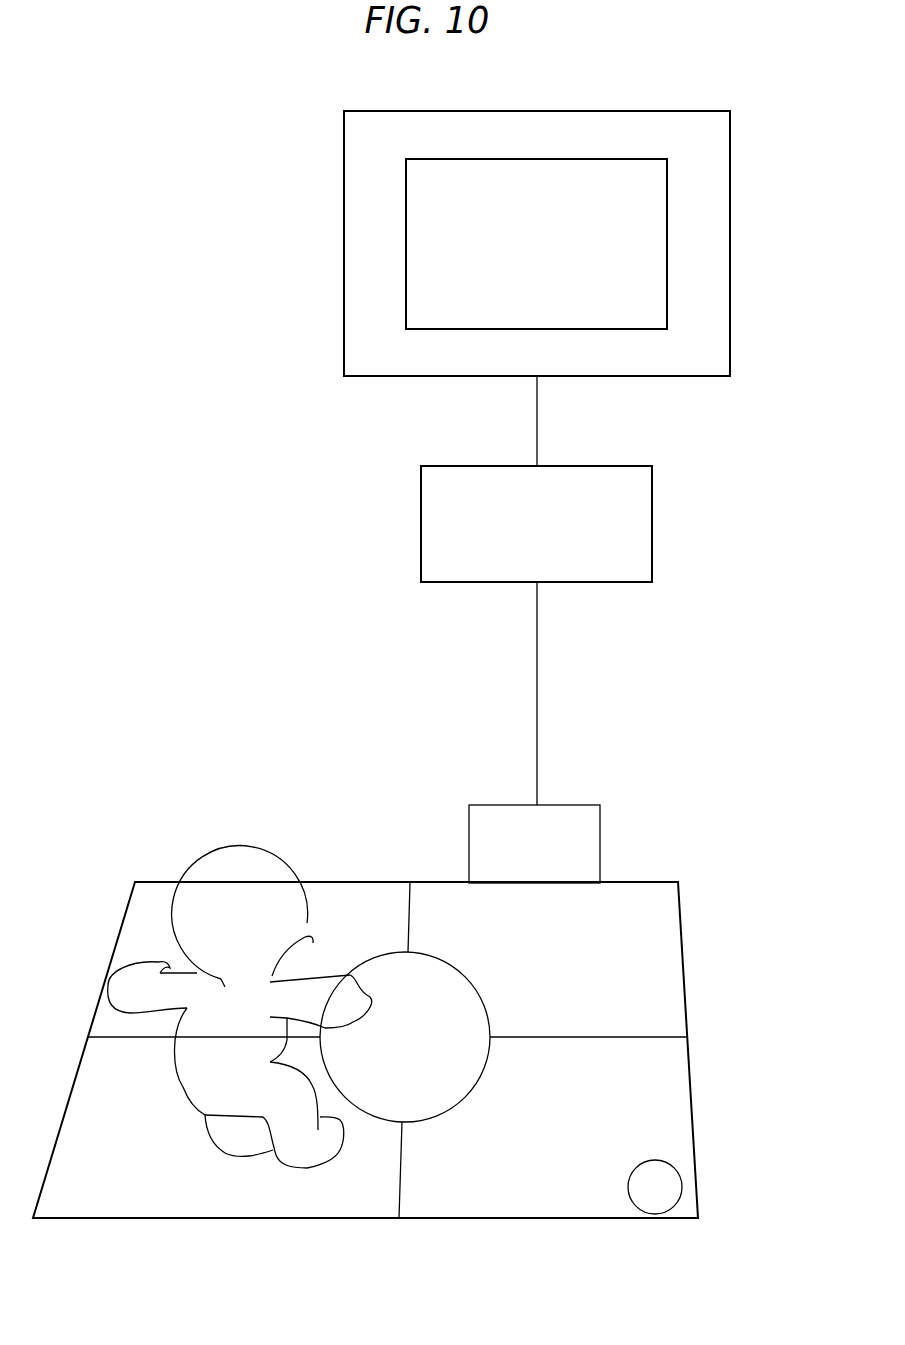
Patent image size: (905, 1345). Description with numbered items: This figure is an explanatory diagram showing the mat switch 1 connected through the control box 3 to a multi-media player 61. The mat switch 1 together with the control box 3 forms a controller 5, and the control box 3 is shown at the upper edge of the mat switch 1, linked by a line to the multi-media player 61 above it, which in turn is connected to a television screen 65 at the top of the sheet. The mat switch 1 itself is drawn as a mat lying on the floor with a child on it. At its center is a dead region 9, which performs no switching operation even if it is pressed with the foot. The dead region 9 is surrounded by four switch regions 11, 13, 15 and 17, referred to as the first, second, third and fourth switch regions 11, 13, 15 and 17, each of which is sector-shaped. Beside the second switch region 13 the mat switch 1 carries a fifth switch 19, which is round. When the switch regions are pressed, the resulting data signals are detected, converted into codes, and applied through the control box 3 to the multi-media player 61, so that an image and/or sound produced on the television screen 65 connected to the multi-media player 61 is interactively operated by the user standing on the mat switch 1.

The television screen 65 is at (730, 288).
The multi-media player 61 is at (652, 488).
The control box 3 is at (600, 815).
The controller 5 is at (692, 966).
The mat switch 1 is at (688, 1012).
The dead region 9 is at (397, 1050).
The first switch region 11 is at (564, 978).
The second switch region 13 is at (563, 1150).
The third switch region 15 is at (129, 1148).
The fourth switch region 17 is at (345, 935).
The fifth switch 19 is at (643, 1198).